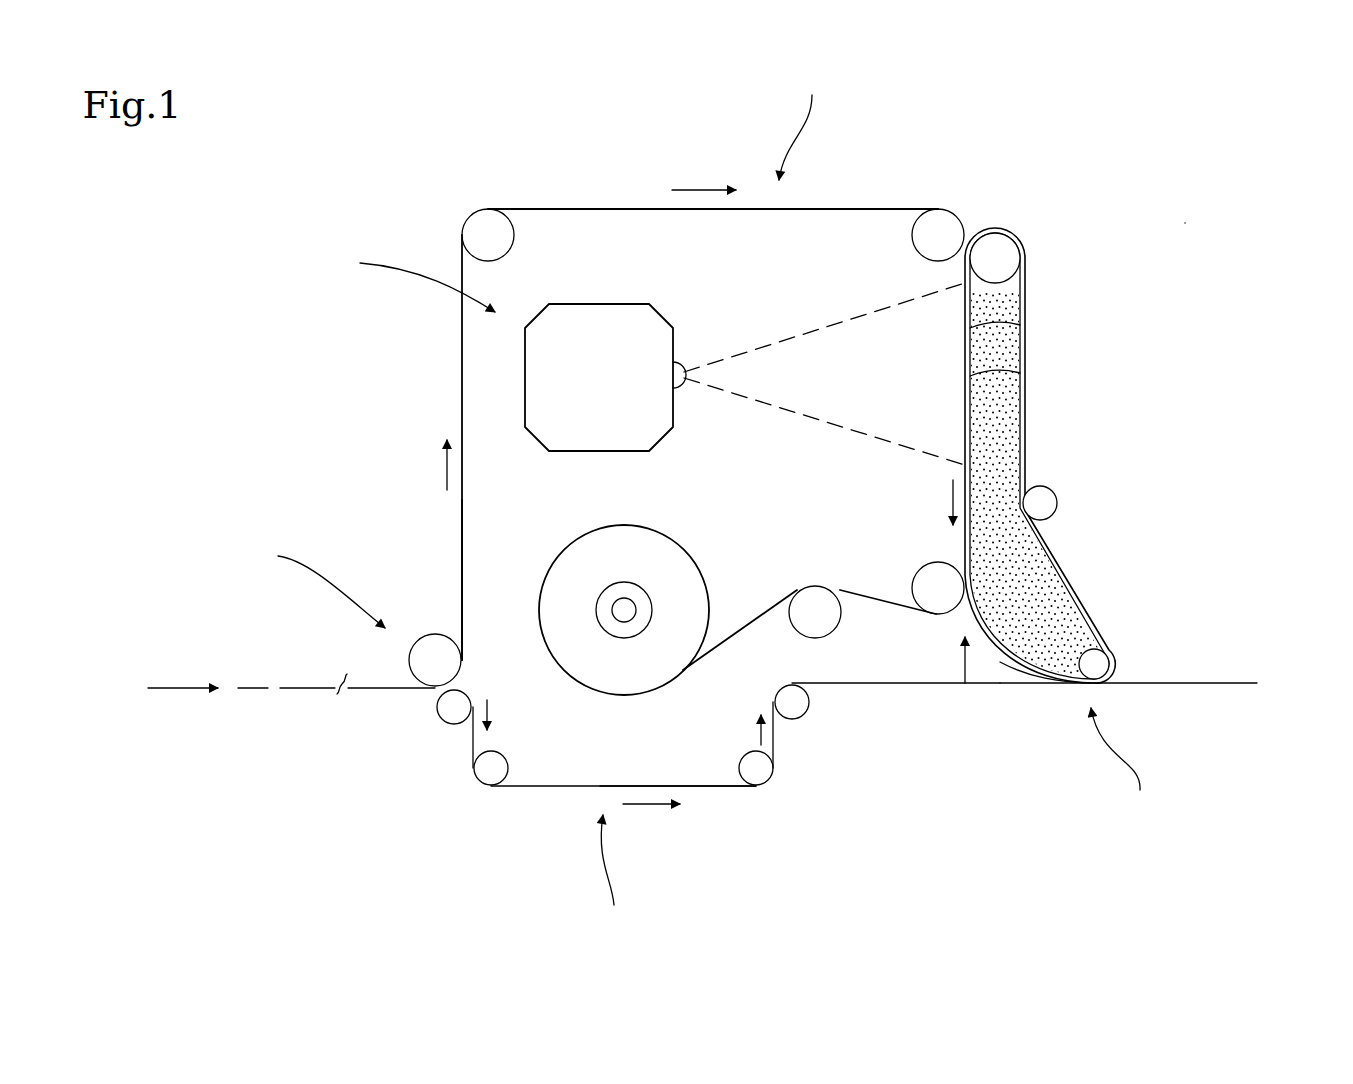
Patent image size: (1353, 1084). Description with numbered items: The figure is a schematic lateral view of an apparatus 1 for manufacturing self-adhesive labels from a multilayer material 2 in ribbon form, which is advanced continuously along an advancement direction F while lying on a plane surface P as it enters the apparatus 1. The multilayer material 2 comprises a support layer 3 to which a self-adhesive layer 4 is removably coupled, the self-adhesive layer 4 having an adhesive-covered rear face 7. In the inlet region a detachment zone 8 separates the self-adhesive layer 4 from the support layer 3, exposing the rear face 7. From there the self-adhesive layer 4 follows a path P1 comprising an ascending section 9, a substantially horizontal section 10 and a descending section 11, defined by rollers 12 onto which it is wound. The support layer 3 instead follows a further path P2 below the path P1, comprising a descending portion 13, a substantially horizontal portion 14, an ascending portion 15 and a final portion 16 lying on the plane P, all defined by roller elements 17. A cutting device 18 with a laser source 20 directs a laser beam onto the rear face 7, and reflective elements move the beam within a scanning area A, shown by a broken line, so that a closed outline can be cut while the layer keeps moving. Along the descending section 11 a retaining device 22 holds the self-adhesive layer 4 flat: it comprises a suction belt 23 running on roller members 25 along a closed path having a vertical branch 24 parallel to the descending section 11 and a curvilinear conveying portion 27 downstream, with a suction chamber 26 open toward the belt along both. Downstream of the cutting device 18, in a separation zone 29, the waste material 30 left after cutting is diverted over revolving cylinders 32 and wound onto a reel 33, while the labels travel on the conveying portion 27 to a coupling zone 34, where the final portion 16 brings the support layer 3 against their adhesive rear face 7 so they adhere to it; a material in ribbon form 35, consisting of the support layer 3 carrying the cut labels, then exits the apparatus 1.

The apparatus 1 is at (1190, 221).
The multilayer material 2 is at (378, 688).
The support layer 3 is at (716, 790).
The self-adhesive layer 4 is at (845, 209).
The rear face 7 is at (470, 548).
The detachment zone 8 is at (319, 581).
The ascending section 9 is at (461, 402).
The substantially horizontal section 10 is at (556, 209).
The descending section 11 is at (1000, 322).
The rollers 12 is at (484, 232).
The descending portion 13 is at (470, 745).
The substantially horizontal portion 14 is at (545, 790).
The ascending portion 15 is at (776, 742).
The final portion 16 is at (888, 683).
The roller elements 17 is at (440, 716).
The cutting device 18 is at (411, 277).
The laser source 20 is at (558, 372).
The retaining device 22 is at (1036, 415).
The suction belt 23 is at (952, 548).
The branch 24 is at (1000, 366).
The roller members 25 is at (995, 250).
The suction chamber 26 is at (1060, 603).
The conveying portion 27 is at (1013, 660).
The separation zone 29 is at (967, 683).
The waste material 30 is at (738, 638).
The revolving cylinders 32 is at (813, 588).
The reel 33 is at (636, 556).
The coupling zone 34 is at (1124, 766).
The material in ribbon form 35 is at (1202, 683).
The scanning area A is at (822, 322).
The advancement direction F is at (183, 673).
The plane surface P is at (262, 690).
The path P1 is at (803, 121).
The further path P2 is at (615, 877).